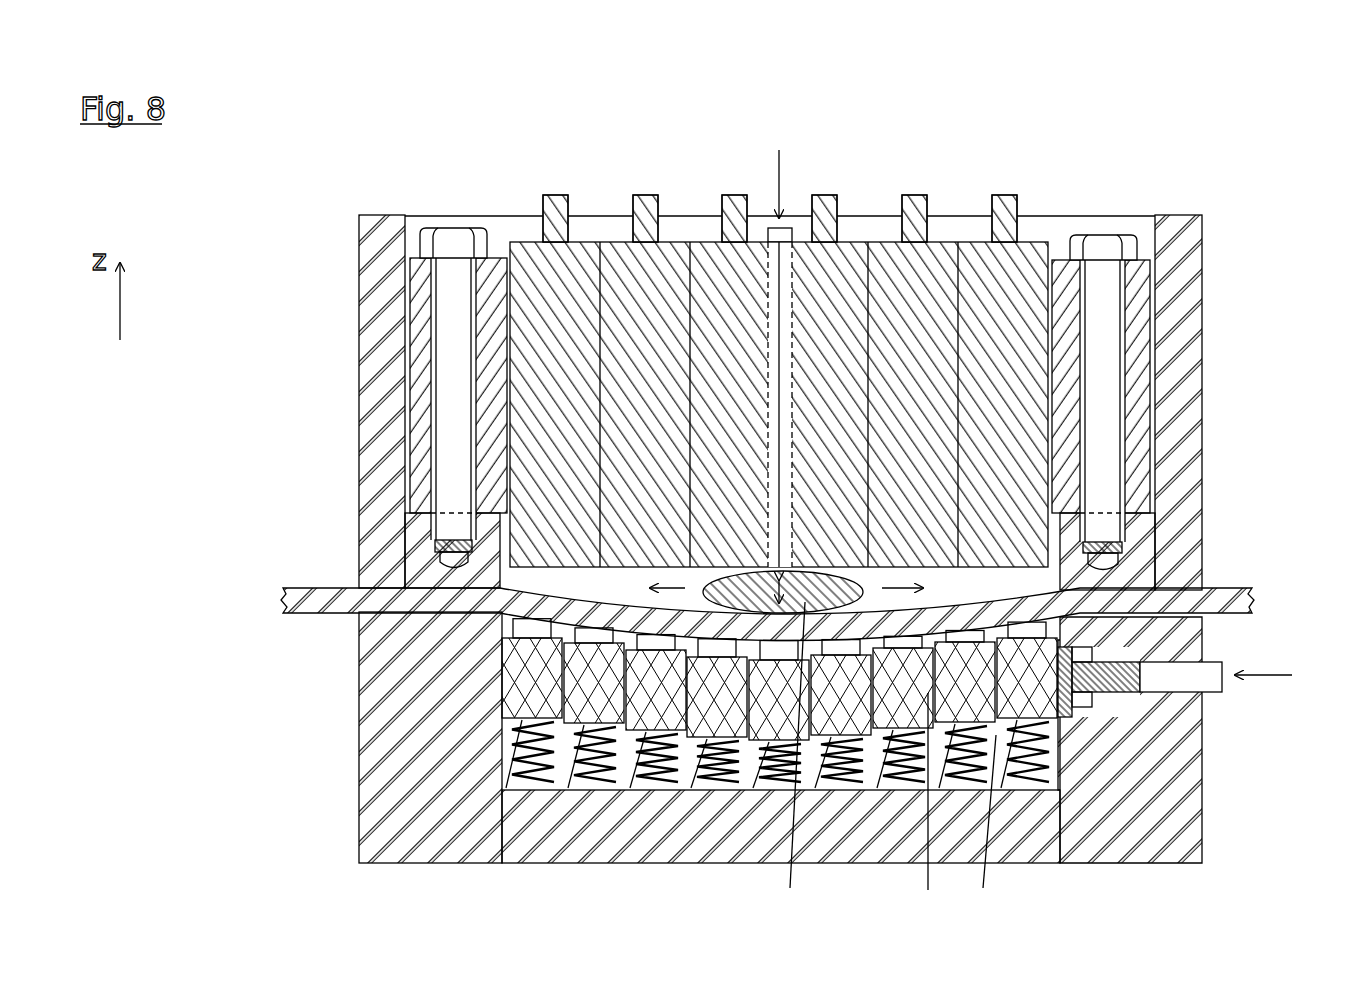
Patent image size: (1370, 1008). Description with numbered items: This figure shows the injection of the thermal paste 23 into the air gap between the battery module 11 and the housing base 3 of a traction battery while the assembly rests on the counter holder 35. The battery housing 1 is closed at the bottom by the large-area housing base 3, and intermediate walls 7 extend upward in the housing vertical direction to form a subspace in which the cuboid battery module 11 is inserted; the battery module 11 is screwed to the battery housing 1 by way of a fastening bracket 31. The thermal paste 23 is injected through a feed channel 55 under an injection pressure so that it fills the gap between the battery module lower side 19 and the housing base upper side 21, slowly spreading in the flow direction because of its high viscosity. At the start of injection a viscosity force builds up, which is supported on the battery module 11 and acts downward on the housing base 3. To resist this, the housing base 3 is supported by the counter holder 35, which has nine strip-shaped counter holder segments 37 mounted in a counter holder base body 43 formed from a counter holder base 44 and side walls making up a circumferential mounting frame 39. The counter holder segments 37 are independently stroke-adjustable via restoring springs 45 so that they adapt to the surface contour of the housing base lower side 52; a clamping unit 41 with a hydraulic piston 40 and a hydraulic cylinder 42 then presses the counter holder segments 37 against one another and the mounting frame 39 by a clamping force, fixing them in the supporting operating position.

The battery housing 1 is at (322, 375).
The housing base 3 is at (292, 608).
The intermediate walls 7 is at (383, 472).
The battery module 11 is at (1052, 343).
The battery module lower side 19 is at (1021, 720).
The housing base upper side 21 is at (530, 690).
The thermal paste 23 is at (818, 665).
The fastening bracket 31 is at (418, 562).
The counter holder 35 is at (320, 688).
The counter holder segments 37 is at (852, 722).
The mounting frame 39 is at (1140, 772).
The hydraulic piston 40 is at (1075, 697).
The clamping unit 41 is at (1206, 711).
The hydraulic cylinder 42 is at (1222, 682).
The counter holder base body 43 is at (932, 757).
The counter holder base 44 is at (1115, 840).
The restoring springs 45 is at (725, 760).
The housing base lower side 52 is at (670, 650).
The feed channel 55 is at (793, 240).